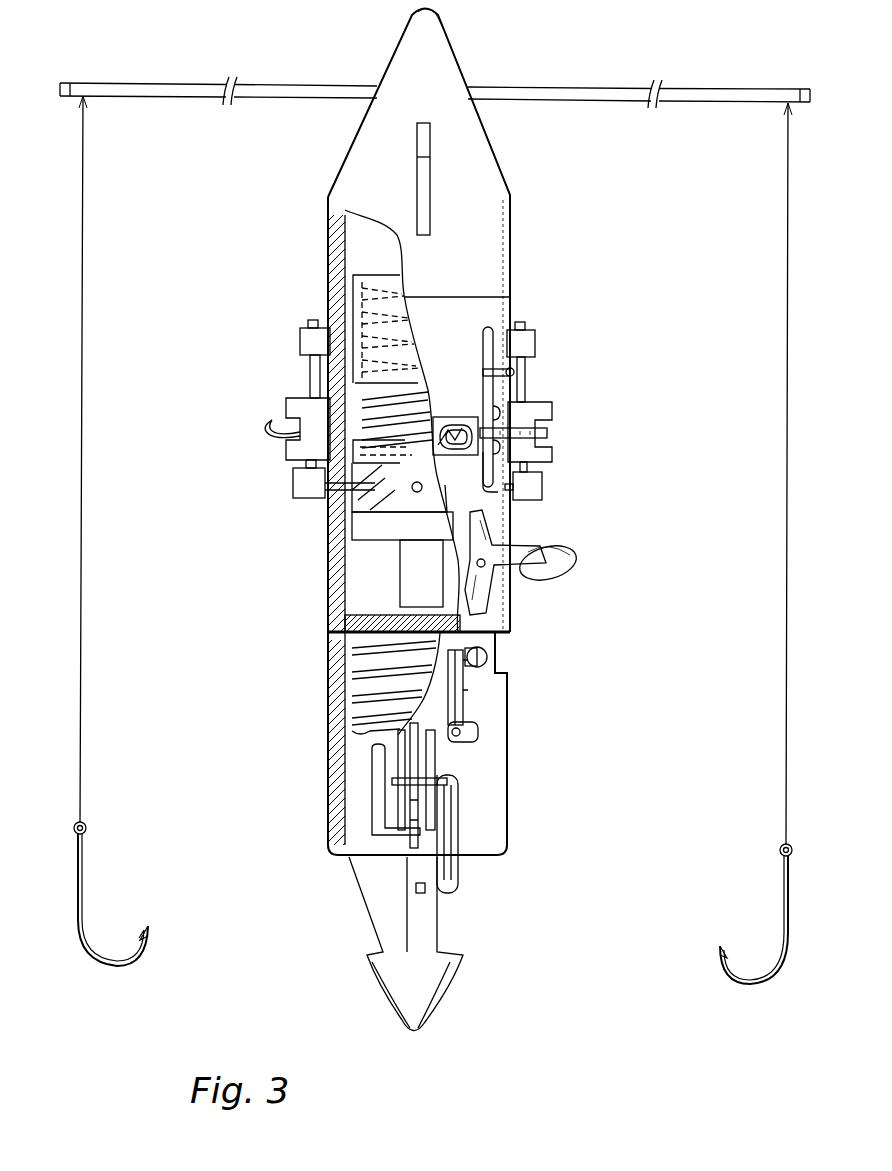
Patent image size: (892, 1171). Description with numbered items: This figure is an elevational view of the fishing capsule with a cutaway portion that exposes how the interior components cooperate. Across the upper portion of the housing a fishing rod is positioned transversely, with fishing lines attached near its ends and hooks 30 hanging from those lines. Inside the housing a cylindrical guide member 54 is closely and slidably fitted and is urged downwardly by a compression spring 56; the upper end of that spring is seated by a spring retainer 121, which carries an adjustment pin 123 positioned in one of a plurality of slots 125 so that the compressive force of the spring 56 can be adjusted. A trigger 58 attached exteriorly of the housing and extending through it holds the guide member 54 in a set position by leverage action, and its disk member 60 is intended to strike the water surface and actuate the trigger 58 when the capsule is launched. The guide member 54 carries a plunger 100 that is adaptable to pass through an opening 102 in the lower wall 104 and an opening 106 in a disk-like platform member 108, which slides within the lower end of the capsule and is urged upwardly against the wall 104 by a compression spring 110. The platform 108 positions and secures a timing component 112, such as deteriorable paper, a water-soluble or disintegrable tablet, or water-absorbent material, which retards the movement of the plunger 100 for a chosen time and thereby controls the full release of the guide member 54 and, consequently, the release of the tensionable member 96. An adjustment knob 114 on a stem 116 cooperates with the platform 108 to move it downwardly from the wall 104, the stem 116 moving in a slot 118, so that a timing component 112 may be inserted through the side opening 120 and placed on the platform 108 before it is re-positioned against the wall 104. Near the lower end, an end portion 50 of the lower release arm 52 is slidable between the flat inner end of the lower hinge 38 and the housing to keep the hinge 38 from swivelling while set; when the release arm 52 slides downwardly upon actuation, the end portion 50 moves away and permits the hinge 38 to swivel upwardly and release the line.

The hooks 30 is at (83, 907).
The lower hinge 38 is at (345, 855).
The end portion 50 is at (414, 748).
The lower release arm 52 is at (372, 800).
The cylindrical guide member 54 is at (358, 545).
The compression spring 56 is at (372, 452).
The trigger 58 is at (530, 542).
The disk member 60 is at (568, 570).
The tensionable member 96 is at (550, 436).
The plunger 100 is at (372, 585).
The opening 102 is at (505, 630).
The lower wall 104 is at (352, 627).
The opening 106 is at (362, 655).
The platform member 108 is at (352, 645).
The compression spring 110 is at (350, 729).
The timing component 112 is at (362, 690).
The adjustment knob 114 is at (482, 665).
The stem 116 is at (468, 695).
The slot 118 is at (458, 742).
The side opening 120 is at (500, 673).
The spring retainer 121 is at (360, 298).
The adjustment pin 123 is at (514, 372).
The slots 125 is at (500, 420).